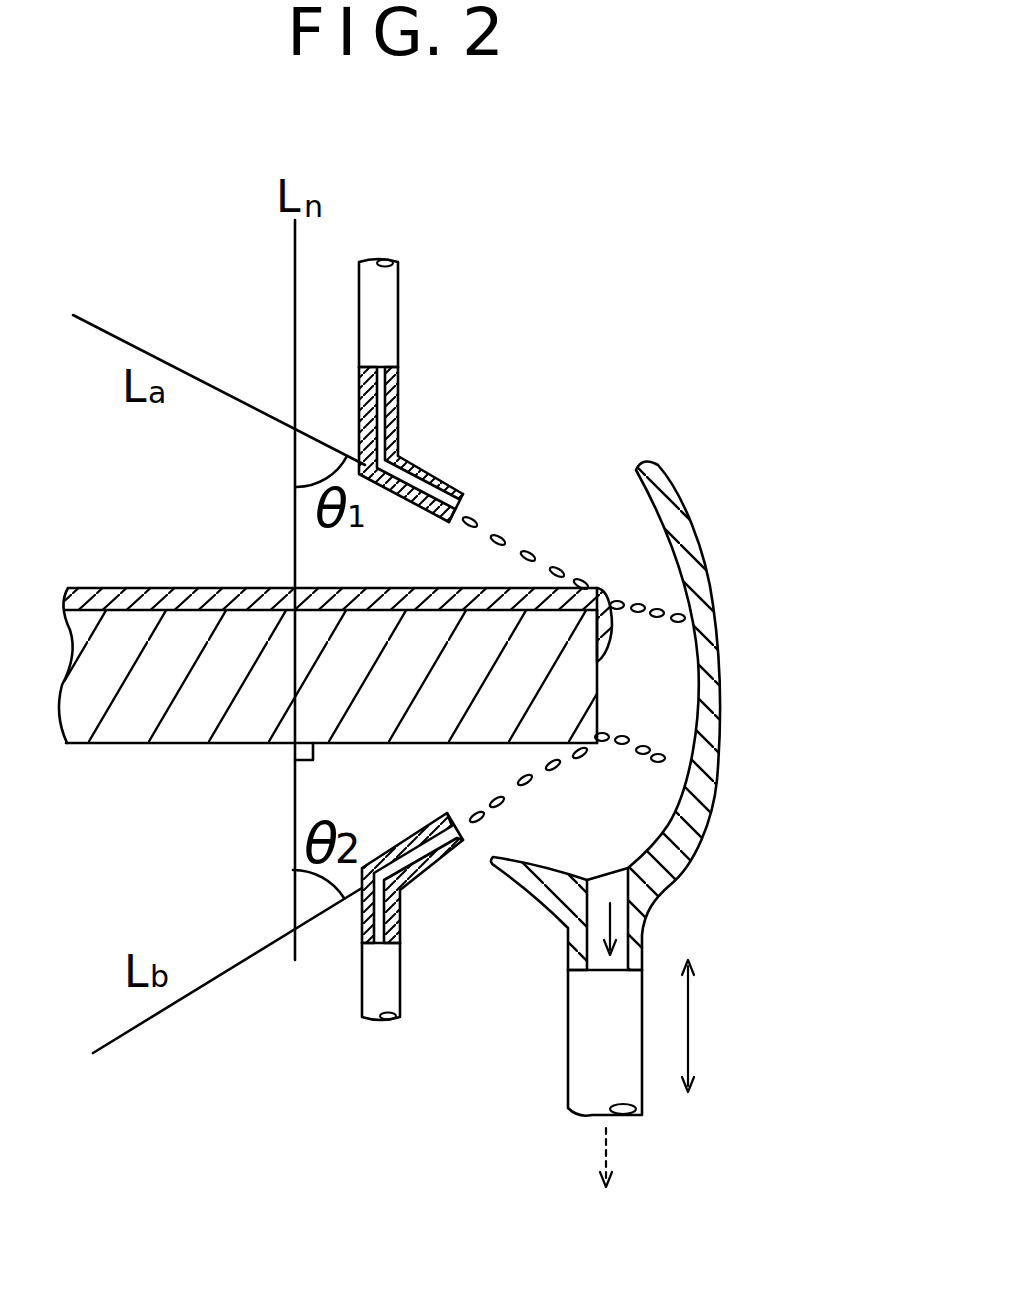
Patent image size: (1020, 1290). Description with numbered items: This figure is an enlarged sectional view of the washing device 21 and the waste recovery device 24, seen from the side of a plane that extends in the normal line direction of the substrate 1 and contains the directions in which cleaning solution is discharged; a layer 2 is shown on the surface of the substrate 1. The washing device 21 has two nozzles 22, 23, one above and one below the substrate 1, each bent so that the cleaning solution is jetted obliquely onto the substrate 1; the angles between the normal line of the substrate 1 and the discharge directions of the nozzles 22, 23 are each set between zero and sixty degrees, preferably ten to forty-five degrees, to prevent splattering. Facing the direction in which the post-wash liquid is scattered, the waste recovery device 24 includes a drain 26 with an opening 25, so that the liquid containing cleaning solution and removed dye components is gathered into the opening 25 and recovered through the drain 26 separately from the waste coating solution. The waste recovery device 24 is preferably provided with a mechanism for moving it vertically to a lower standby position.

The substrate 1 is at (183, 715).
The coating film 2 is at (212, 587).
The washing device 21 is at (357, 387).
The nozzle 22 is at (400, 311).
The nozzle 23 is at (380, 960).
The waste recovery device 24 is at (728, 718).
The opening 25 is at (610, 533).
The drain 26 is at (587, 1057).